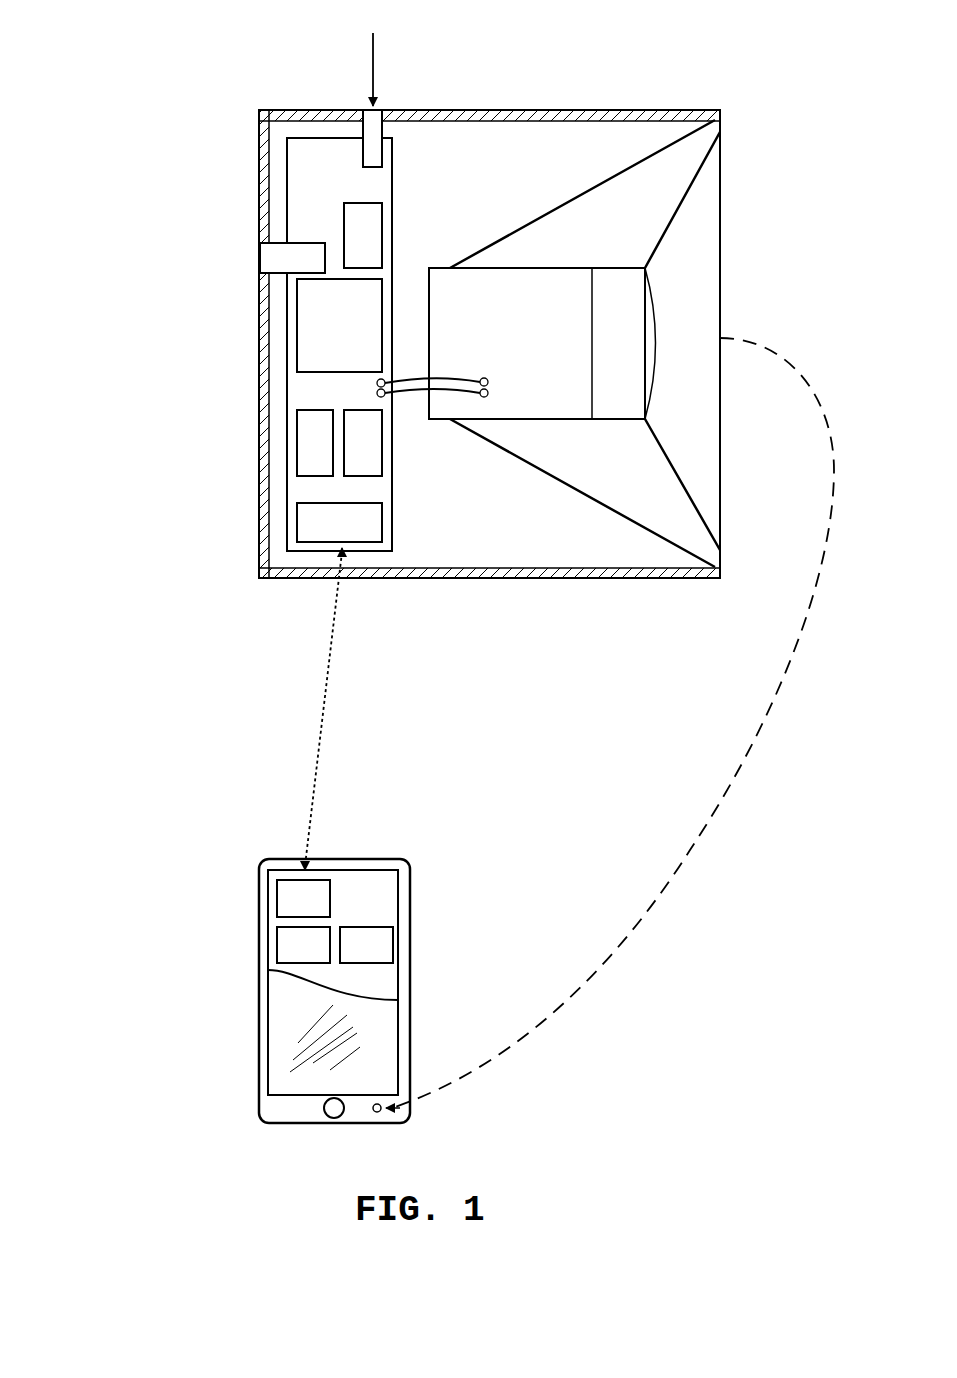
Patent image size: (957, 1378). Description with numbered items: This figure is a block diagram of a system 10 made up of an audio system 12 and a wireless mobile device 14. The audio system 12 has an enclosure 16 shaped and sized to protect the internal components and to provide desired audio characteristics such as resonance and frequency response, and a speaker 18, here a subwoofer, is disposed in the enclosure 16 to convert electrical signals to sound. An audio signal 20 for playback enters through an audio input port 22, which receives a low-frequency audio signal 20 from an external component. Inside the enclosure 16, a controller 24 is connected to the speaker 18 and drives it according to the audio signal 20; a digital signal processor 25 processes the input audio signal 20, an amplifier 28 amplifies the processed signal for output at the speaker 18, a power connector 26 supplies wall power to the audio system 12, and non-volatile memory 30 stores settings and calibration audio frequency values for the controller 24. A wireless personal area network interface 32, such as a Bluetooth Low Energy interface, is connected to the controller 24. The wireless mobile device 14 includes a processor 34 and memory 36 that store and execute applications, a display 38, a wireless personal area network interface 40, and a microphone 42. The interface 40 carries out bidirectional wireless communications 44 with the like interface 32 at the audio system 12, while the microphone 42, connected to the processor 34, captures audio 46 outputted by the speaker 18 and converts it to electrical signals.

The system 10 is at (124, 616).
The audio system 12 is at (243, 400).
The wireless mobile device 14 is at (245, 962).
The enclosure 16 is at (262, 345).
The speaker 18 is at (497, 356).
The audio signal 20 is at (368, 57).
The audio input port 22 is at (362, 120).
The controller 24 is at (302, 454).
The digital signal processor 25 is at (349, 249).
The power connector 26 is at (279, 270).
The amplifier 28 is at (326, 337).
The non-volatile memory 30 is at (350, 454).
The wireless personal area network interface 32 is at (326, 534).
The processor 34 is at (290, 956).
The memory 36 is at (353, 956).
The display 38 is at (359, 1079).
The wireless personal area network interface 40 is at (290, 909).
The microphone 42 is at (377, 1112).
The bidirectional wireless communications 44 is at (273, 709).
The audio 46 is at (611, 723).